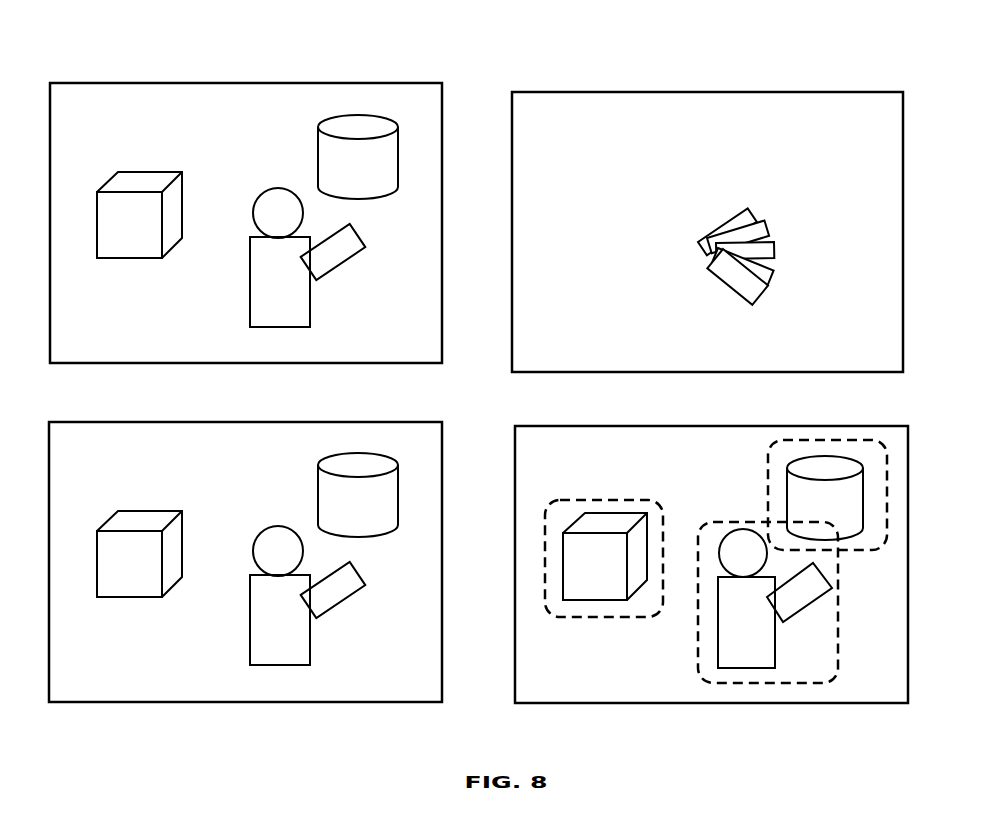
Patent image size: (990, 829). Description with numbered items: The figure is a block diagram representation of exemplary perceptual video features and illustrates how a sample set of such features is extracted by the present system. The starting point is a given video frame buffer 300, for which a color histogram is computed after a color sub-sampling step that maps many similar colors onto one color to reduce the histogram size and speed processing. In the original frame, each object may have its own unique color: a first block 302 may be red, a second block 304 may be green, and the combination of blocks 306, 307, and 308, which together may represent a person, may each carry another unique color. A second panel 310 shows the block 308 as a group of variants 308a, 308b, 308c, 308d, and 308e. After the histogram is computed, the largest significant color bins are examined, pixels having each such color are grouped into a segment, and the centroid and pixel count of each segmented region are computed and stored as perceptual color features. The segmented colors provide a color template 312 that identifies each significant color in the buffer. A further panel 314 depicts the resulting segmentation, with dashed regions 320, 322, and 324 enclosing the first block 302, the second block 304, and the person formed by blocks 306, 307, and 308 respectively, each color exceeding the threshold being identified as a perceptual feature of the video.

The video frame buffer 300 is at (247, 82).
The first block 302 is at (150, 168).
The second block 304 is at (318, 155).
The block 306 is at (312, 307).
The block 307 is at (257, 205).
The block 308 is at (362, 237).
The first card candidate 308a is at (717, 227).
The second card candidate 308b is at (770, 227).
The third card candidate 308c is at (773, 258).
The fourth card candidate 308d is at (772, 273).
The fifth card candidate 308e is at (733, 297).
The candidate objects frame 310 is at (708, 90).
The color template 312 is at (248, 422).
The segmented image frame 314 is at (692, 424).
The segmentation region around cube 320 is at (605, 617).
The segmentation region around cylinder 322 is at (887, 495).
The segmentation region around person 324 is at (838, 627).